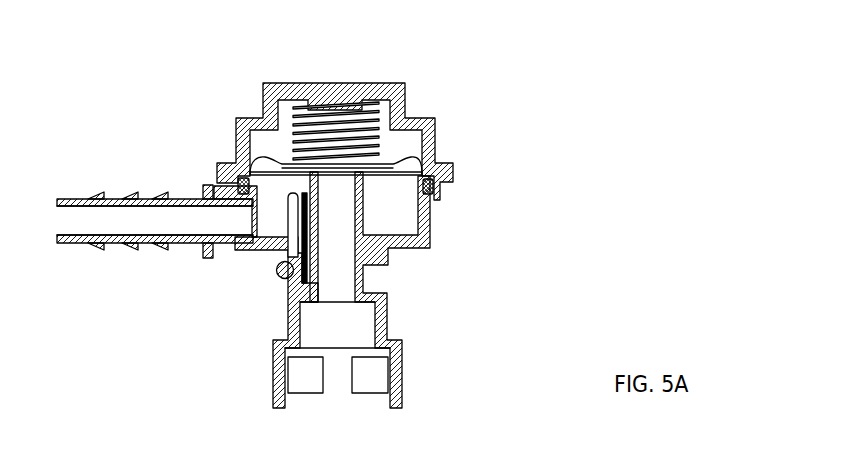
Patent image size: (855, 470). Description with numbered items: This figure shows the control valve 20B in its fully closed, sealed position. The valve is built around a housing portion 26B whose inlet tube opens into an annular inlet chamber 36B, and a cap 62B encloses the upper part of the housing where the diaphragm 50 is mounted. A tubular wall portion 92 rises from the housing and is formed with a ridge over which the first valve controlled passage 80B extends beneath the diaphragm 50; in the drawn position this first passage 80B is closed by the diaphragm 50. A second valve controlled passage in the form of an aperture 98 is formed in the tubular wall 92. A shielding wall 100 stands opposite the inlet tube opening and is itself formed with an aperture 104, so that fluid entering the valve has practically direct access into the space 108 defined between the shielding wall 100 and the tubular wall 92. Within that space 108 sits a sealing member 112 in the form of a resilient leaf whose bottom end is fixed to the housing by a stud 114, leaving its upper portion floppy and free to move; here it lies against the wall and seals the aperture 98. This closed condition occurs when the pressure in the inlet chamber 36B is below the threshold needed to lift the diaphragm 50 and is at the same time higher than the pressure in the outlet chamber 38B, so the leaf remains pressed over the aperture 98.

The control valve 20B is at (492, 150).
The shielding wall 100 is at (200, 195).
The inlet chamber 36B is at (272, 210).
The cap 62B is at (423, 117).
The diaphragm 50 is at (405, 162).
The first valve controlled passage 80B is at (373, 175).
The housing portion 26B is at (418, 240).
The tubular wall portion 92 is at (357, 212).
The aperture 98 is at (383, 298).
The outlet chamber 38B is at (330, 202).
The sealing member 112 is at (313, 218).
The aperture 104 is at (267, 240).
The space 108 is at (295, 217).
The stud 114 is at (280, 262).